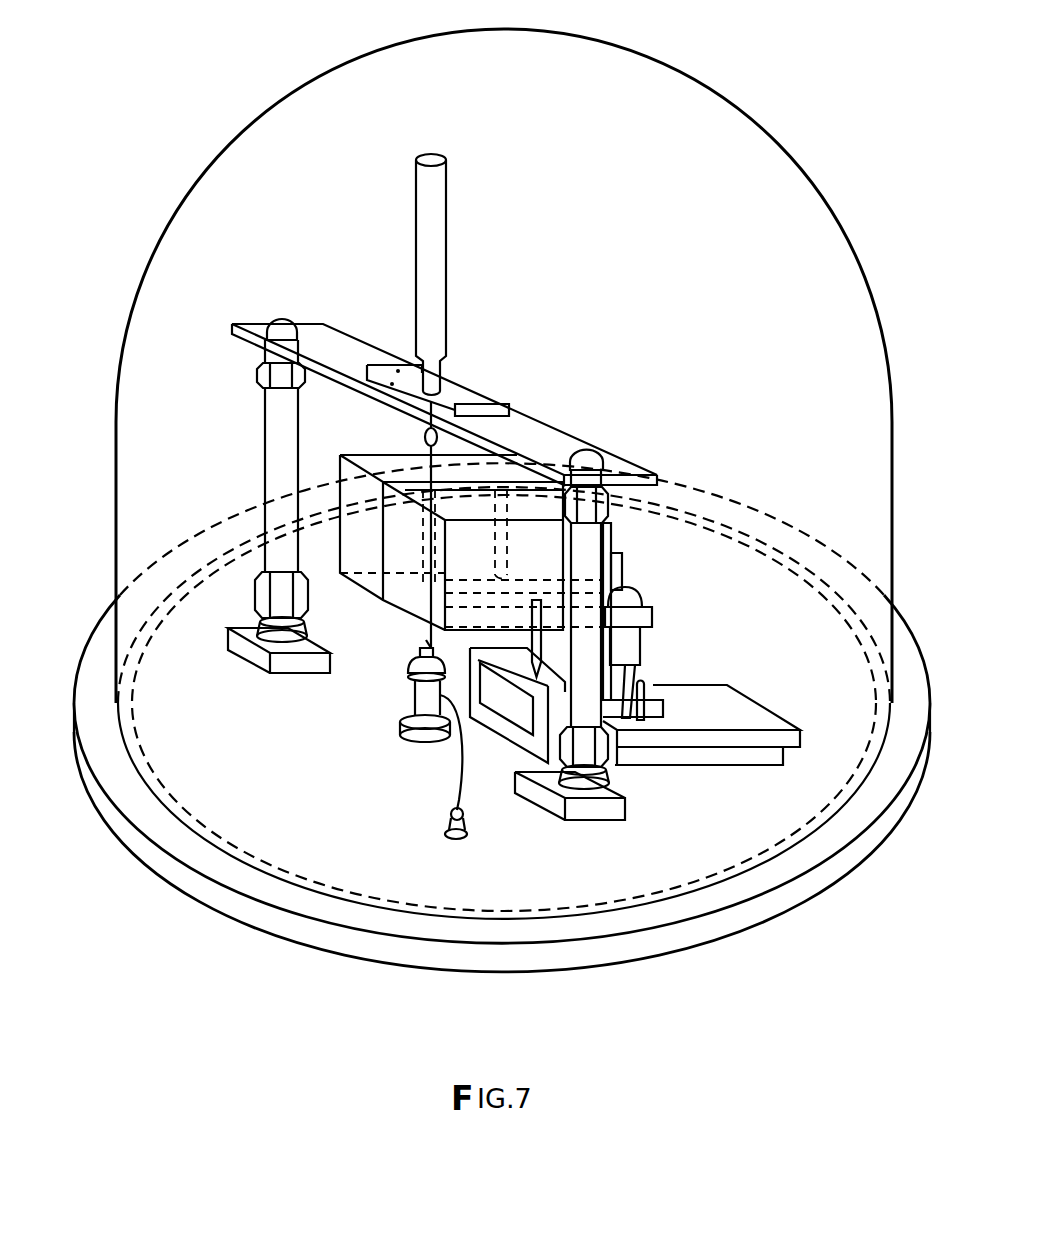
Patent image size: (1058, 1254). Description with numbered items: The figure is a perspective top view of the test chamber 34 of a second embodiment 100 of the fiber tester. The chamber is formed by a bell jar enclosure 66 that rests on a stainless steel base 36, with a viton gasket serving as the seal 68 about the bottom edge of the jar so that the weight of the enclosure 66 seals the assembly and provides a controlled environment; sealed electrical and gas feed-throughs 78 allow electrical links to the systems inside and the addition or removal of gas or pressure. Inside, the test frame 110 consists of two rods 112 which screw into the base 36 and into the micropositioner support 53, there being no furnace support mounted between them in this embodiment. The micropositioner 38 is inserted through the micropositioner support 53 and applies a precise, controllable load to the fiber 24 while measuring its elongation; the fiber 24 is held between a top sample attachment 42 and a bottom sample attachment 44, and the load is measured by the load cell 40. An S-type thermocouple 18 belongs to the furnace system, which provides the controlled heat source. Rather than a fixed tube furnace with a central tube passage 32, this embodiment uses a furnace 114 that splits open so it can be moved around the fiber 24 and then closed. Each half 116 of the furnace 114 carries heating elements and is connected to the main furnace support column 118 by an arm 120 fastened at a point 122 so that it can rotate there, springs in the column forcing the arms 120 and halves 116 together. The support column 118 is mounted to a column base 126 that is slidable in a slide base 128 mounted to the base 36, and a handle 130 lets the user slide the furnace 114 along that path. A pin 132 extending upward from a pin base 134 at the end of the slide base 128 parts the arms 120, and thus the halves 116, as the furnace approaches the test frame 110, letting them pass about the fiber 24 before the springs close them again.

The second embodiment 100 is at (806, 111).
The test frame 110 is at (628, 270).
The micropositioner 38 is at (432, 203).
The top sample attachment 42 is at (467, 398).
The S-type thermocouple 18 is at (453, 481).
The micropositioner support 53 is at (347, 345).
The rods 112 is at (272, 314).
The furnace halves 116 is at (287, 396).
The furnace 114 is at (356, 482).
The tube passage 32 is at (356, 519).
The fibers 24 is at (412, 596).
The enclosure 66 is at (822, 203).
The test chamber 34 is at (810, 360).
The base 36 is at (838, 866).
The seal 68 is at (862, 768).
The point 122 is at (615, 585).
The arm 120 is at (639, 578).
The main furnace support column 118 is at (644, 603).
The handle 130 is at (630, 639).
The column base 126 is at (646, 695).
The slide base 128 is at (723, 738).
The bottom sample attachment 44 is at (420, 642).
The load cell 40 is at (415, 691).
The pin 132 is at (411, 738).
The pin base 134 is at (549, 688).
The feed-throughs 78 is at (446, 821).